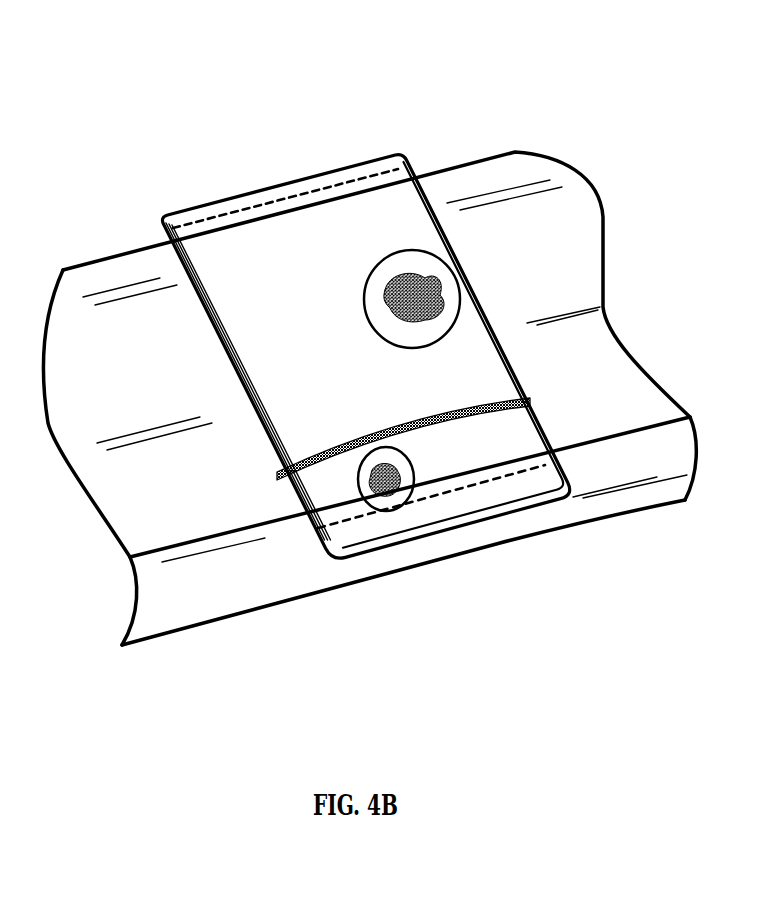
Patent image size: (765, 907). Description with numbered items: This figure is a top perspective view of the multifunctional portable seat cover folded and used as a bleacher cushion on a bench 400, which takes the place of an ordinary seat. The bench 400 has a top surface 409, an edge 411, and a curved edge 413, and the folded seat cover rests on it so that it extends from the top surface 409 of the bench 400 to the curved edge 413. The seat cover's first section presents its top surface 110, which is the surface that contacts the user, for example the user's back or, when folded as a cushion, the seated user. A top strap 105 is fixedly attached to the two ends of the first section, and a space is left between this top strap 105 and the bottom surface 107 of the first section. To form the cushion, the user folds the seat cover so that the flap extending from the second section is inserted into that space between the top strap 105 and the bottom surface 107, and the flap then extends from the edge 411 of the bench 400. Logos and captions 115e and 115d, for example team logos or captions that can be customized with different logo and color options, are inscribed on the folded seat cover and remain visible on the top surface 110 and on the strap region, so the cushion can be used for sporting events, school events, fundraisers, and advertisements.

The bench 400 is at (112, 88).
The top surface 110 is at (240, 257).
The logo and caption 115e is at (410, 246).
The top strap 105 is at (330, 448).
The bottom surface 107 is at (527, 443).
The edge 411 is at (355, 527).
The logo and caption 115d is at (413, 493).
The top surface 409 is at (572, 203).
The curved edge 413 is at (148, 617).